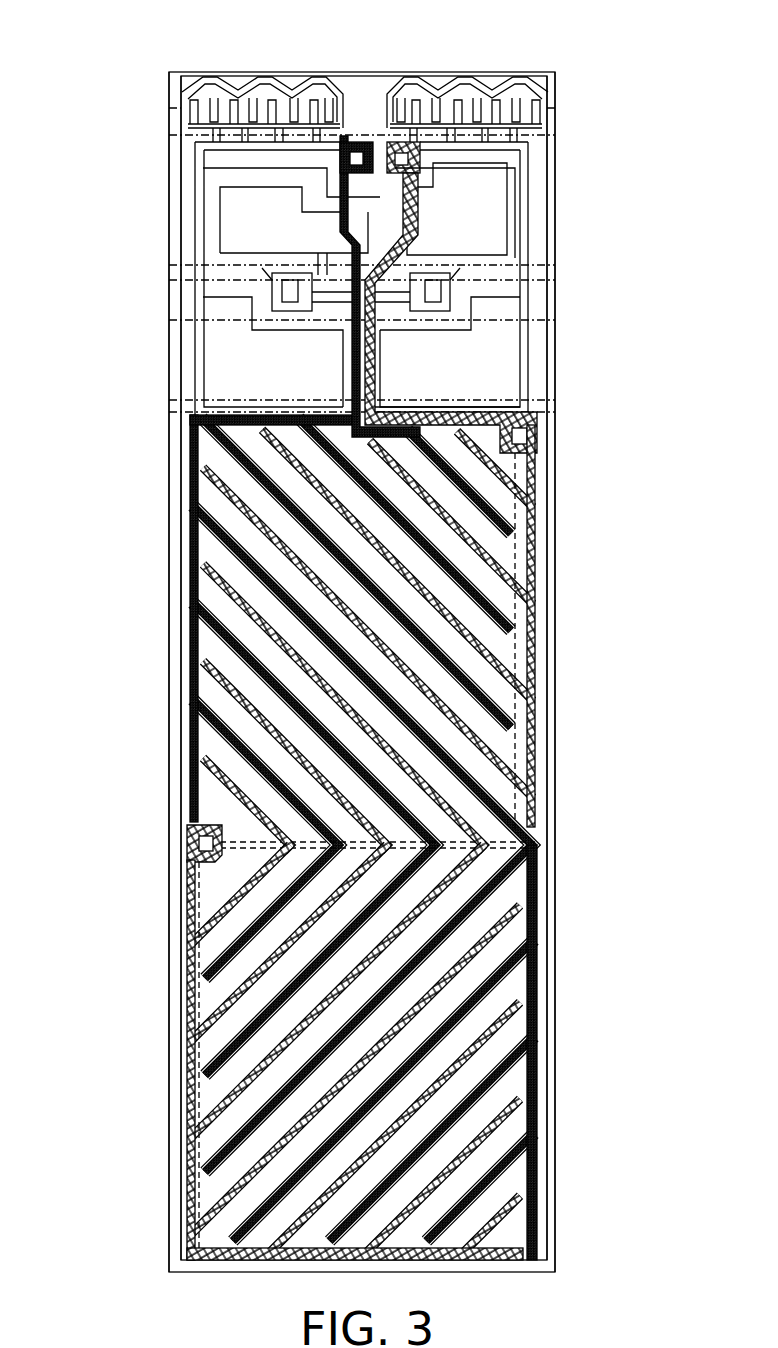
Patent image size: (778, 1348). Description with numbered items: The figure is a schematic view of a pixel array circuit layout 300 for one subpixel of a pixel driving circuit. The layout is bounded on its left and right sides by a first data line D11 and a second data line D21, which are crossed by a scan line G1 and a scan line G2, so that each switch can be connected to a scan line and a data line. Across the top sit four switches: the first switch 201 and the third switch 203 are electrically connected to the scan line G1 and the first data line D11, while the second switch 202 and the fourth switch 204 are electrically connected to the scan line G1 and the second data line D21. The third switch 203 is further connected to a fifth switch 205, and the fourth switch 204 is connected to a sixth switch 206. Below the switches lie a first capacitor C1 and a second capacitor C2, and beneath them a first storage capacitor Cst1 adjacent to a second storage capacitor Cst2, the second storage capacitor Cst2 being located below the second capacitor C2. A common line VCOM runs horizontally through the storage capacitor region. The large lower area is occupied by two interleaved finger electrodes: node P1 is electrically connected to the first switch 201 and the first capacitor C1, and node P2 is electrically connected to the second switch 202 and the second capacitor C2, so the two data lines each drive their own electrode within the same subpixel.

The pixel array circuit layout 300 is at (92, 31).
The first data line D11 is at (175, 71).
The second data line D21 is at (548, 71).
The scan line G1 is at (558, 121).
The scan line G2 is at (558, 272).
The first switch 201 is at (313, 73).
The second switch 202 is at (423, 73).
The third switch 203 is at (250, 79).
The fourth switch 204 is at (483, 78).
The first capacitor C1 is at (252, 223).
The second capacitor C2 is at (468, 223).
The fifth switch 205 is at (267, 297).
The sixth switch 206 is at (451, 298).
The first storage capacitor Cst1 is at (244, 367).
The second storage capacitor Cst2 is at (478, 352).
The common voltage line VCOM is at (558, 405).
The node P1 is at (188, 660).
The node P2 is at (538, 660).